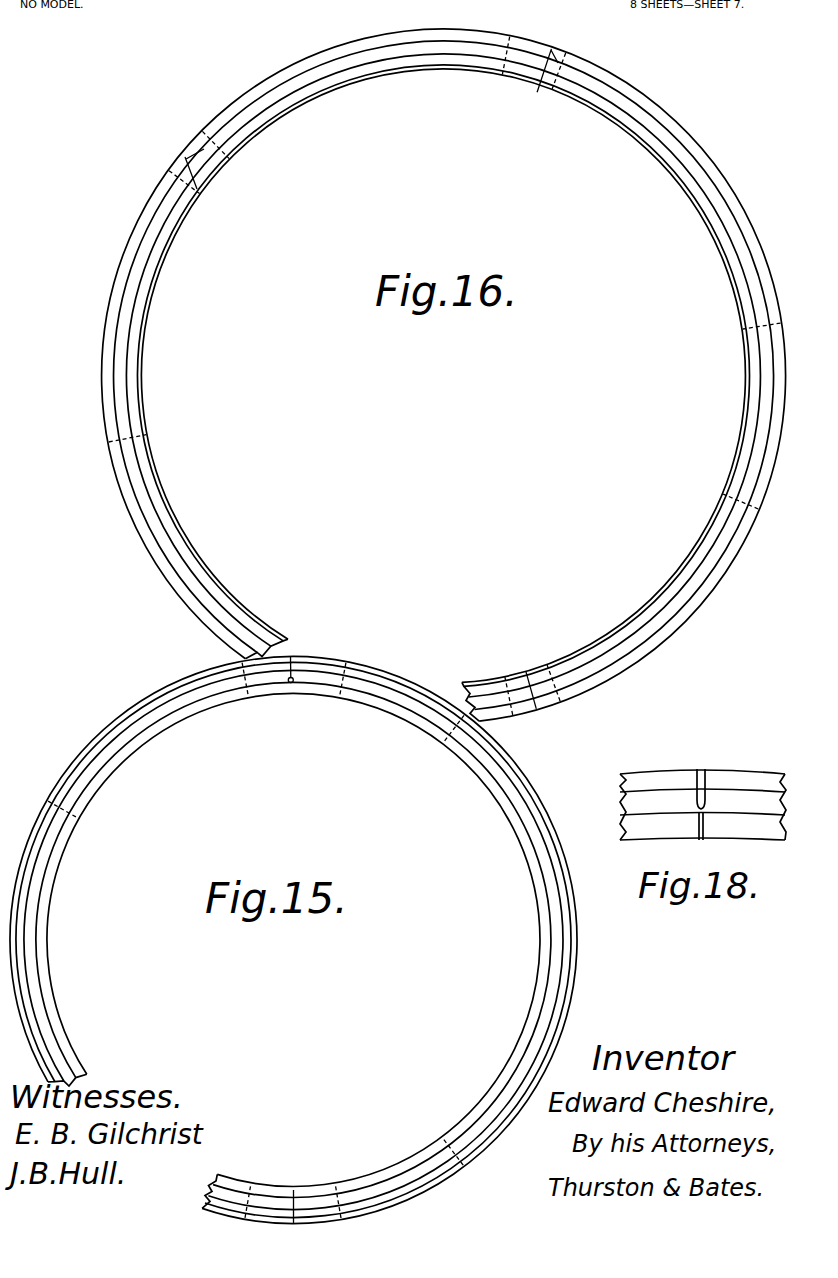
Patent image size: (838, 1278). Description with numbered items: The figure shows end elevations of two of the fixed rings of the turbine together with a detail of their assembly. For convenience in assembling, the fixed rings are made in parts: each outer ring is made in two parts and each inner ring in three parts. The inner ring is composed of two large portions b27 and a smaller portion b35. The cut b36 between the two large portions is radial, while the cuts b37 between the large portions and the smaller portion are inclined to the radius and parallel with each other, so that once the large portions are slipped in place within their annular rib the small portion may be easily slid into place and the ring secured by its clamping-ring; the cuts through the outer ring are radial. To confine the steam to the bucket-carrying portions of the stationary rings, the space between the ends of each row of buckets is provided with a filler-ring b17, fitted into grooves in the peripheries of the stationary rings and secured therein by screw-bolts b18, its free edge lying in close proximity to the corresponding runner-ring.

In FIG. 16, the filler-ring b17 is at (425, 35).
In FIG. 15, the filler-ring b17 is at (358, 702).
In FIG. 16, the screw-bolt b18 is at (208, 132).
In FIG. 15, the screw-bolt b18 is at (74, 812).
In FIG. 16, the large portion of inner ring b27 is at (165, 540).
In FIG. 16, the smaller portion of inner ring b35 is at (313, 78).
In FIG. 16, the radial cut b36 is at (534, 690).
In FIG. 15, the radial cut b36 is at (300, 1195).
In FIG. 18, the radial cut b36 is at (706, 790).
In FIG. 16, the inclined cut b37 is at (197, 189).